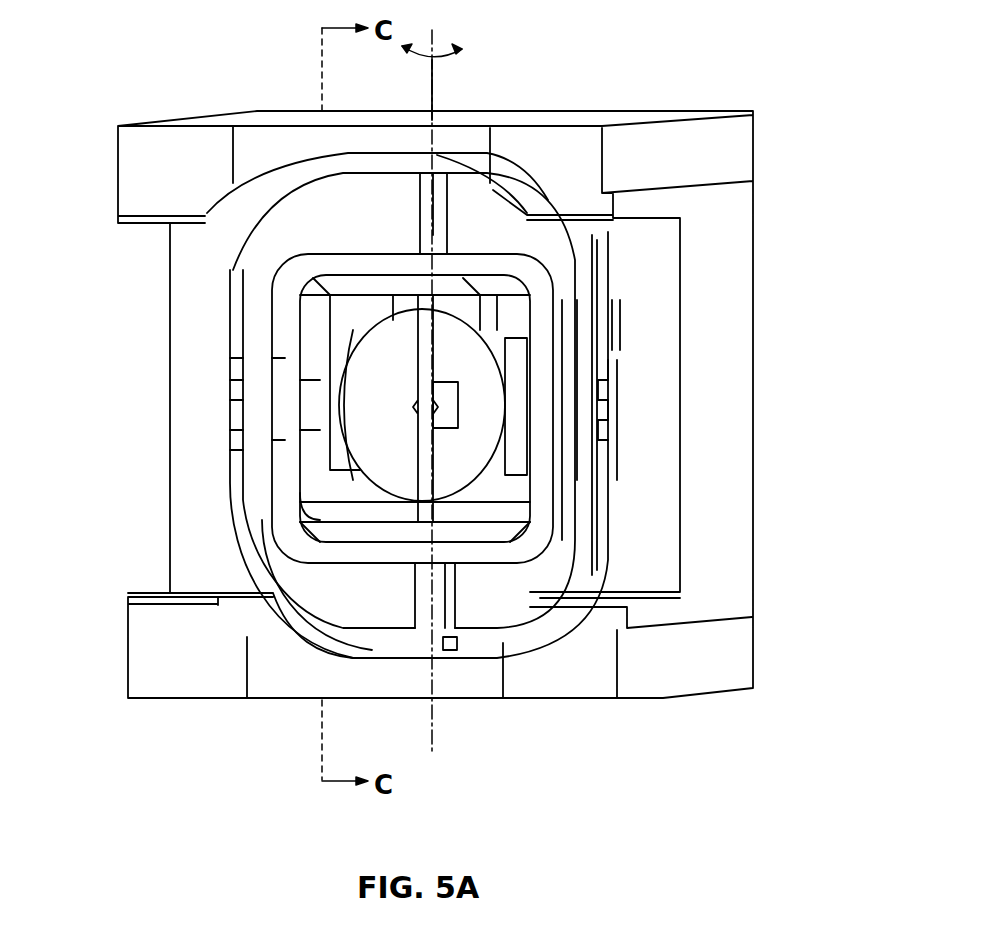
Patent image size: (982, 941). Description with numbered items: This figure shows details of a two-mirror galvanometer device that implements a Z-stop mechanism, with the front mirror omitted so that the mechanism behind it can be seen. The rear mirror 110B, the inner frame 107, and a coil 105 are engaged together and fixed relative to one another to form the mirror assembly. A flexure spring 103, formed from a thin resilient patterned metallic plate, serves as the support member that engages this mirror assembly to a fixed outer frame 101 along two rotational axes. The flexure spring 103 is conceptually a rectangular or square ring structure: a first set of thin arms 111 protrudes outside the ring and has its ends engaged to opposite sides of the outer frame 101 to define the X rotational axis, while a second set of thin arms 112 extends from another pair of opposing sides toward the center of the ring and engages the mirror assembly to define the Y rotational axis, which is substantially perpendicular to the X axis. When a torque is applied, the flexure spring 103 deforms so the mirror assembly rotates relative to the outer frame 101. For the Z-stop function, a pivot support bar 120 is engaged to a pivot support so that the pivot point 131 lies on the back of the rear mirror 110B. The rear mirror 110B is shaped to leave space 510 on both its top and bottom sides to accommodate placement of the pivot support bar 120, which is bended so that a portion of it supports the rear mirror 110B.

The outer frame 101 is at (740, 595).
The flexure spring 103 is at (440, 92).
The coil 105 is at (270, 537).
The inner frame 107 is at (340, 510).
The rear mirror 110B is at (383, 388).
The first set of thin arms 111 is at (610, 403).
The second set of thin arms 112 is at (433, 230).
The pivot support bar 120 is at (423, 462).
The pivot point 131 is at (458, 405).
The space 510 is at (462, 483).